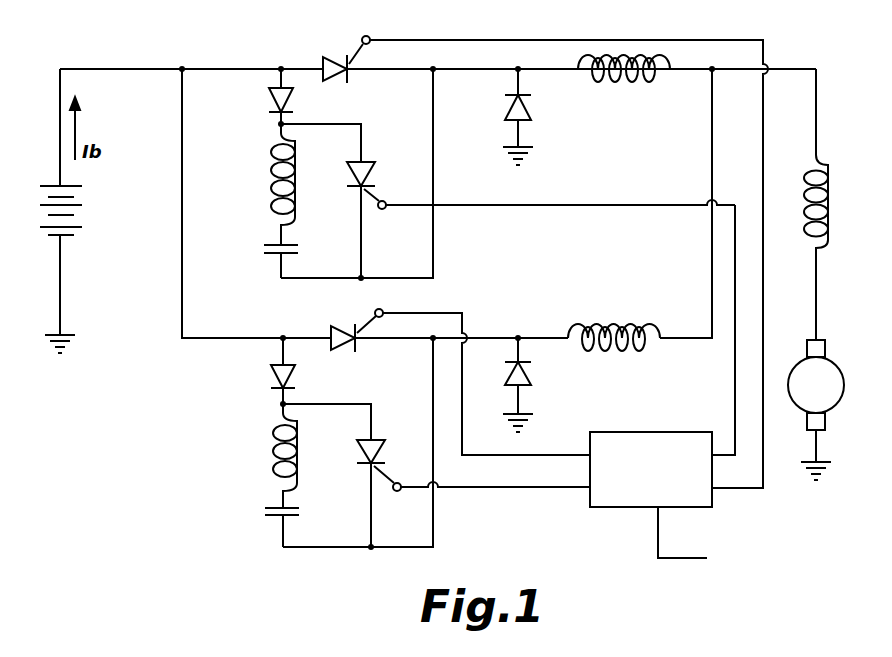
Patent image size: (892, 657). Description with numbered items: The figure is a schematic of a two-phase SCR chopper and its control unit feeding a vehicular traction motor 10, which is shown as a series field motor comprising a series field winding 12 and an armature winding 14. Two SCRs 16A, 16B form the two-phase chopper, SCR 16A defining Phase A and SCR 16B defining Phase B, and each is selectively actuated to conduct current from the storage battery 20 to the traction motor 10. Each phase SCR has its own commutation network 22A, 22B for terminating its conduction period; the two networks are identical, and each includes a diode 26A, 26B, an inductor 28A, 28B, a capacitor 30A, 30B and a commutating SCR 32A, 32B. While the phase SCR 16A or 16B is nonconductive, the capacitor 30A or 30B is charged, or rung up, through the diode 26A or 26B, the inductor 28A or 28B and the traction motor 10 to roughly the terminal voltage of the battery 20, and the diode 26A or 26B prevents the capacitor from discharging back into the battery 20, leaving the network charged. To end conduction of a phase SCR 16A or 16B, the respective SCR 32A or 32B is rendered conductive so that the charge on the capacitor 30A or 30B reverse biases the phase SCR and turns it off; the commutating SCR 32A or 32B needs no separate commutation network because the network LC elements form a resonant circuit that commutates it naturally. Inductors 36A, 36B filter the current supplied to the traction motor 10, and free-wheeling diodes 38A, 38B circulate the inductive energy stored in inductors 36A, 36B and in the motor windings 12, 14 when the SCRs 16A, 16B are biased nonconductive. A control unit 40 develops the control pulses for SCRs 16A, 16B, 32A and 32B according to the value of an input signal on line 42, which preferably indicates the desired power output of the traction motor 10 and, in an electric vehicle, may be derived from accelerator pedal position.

The vehicular traction motor 10 is at (836, 274).
The series field winding 12 is at (830, 192).
The armature winding 14 is at (844, 382).
The SCR 16A is at (342, 38).
The SCR 16B is at (343, 325).
The storage battery 20 is at (82, 210).
The commutation network 22A is at (466, 181).
The commutation network 22B is at (389, 447).
The diode 26A is at (268, 86).
The diode 26B is at (270, 370).
The inductor 28A is at (266, 146).
The inductor 28B is at (270, 438).
The capacitor 30A is at (266, 255).
The capacitor 30B is at (275, 520).
The SCR 32A is at (366, 165).
The SCR 32B is at (382, 440).
The inductor 36A is at (637, 82).
The inductor 36B is at (594, 344).
The free-wheeling diode 38A is at (535, 102).
The free-wheeling diode 38B is at (528, 377).
The control unit 40 is at (628, 510).
The line 42 is at (693, 562).